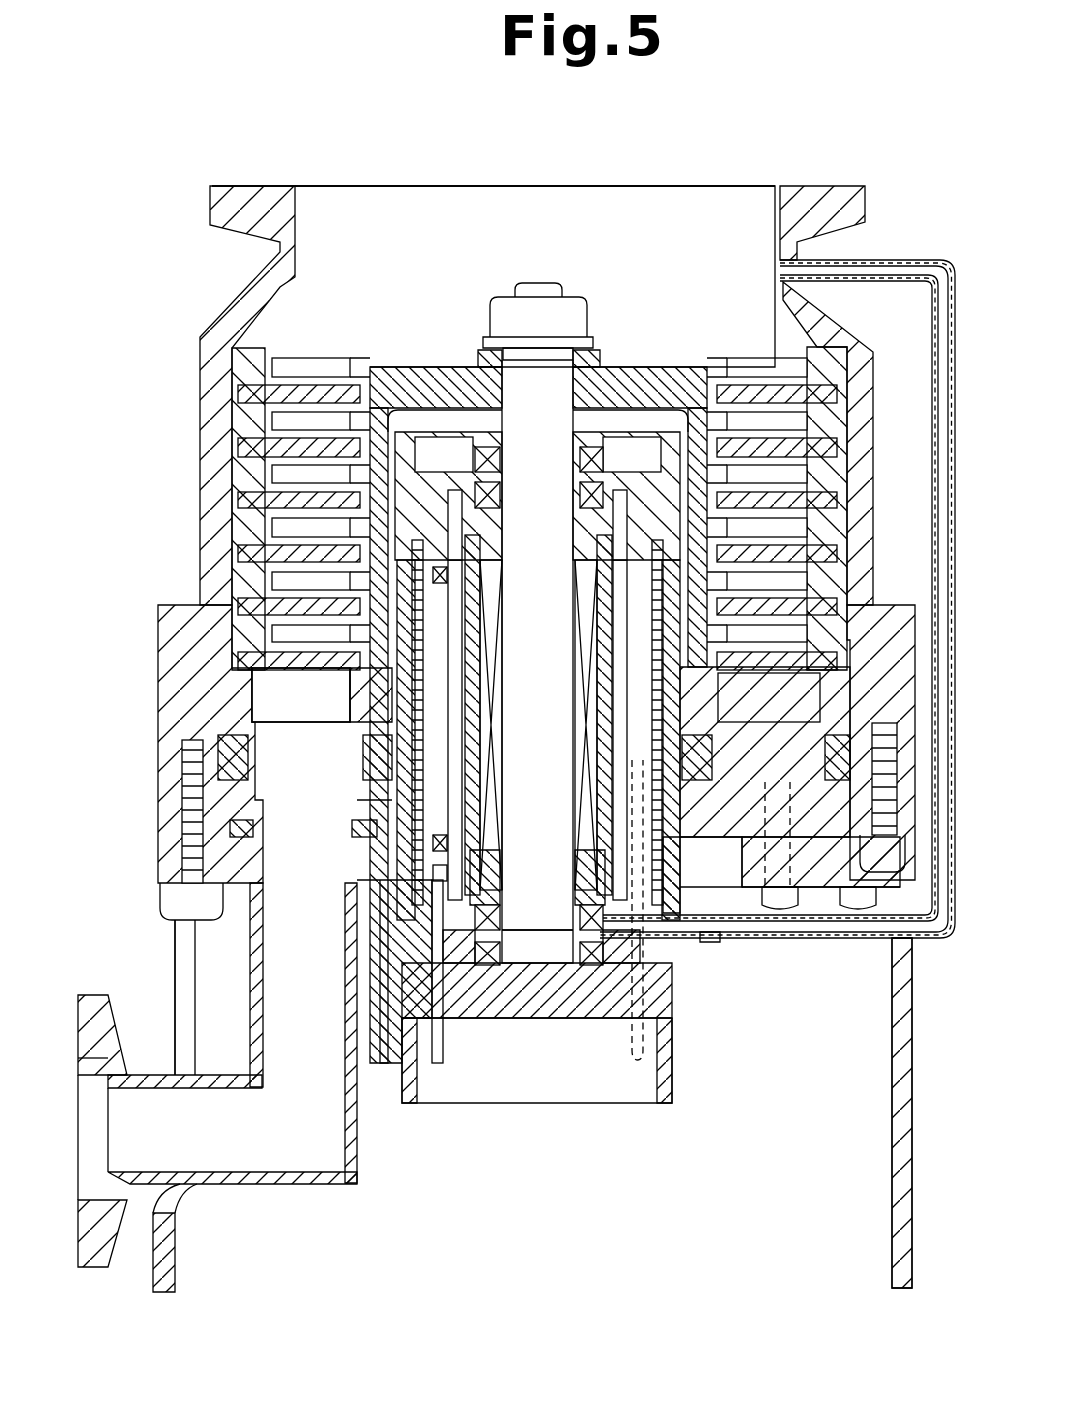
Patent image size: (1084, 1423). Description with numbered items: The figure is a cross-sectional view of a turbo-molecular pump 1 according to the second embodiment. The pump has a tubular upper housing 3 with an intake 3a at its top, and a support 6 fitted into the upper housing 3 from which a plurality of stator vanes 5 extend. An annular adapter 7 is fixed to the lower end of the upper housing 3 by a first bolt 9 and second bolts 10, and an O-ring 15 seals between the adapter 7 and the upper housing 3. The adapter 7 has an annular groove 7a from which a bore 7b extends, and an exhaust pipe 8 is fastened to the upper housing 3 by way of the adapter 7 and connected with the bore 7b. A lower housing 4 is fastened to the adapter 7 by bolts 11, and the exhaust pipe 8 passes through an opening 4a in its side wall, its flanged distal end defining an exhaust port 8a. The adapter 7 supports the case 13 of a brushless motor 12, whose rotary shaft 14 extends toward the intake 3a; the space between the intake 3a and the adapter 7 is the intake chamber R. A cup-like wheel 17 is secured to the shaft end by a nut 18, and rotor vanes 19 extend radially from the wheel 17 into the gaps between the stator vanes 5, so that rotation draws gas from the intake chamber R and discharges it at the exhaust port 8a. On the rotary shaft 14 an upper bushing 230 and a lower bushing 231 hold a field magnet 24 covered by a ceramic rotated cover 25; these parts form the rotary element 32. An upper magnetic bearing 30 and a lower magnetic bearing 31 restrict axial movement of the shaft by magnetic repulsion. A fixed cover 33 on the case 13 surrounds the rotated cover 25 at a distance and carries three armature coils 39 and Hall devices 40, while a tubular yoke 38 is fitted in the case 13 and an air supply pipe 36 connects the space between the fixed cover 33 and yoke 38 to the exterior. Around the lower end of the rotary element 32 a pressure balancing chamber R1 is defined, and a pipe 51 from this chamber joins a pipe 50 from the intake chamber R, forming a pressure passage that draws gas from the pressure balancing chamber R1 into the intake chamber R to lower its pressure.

The turbo-molecular pump 1 is at (318, 152).
The upper housing 3 is at (208, 470).
The intake 3a is at (778, 186).
The lower housing 4 is at (152, 1270).
The opening 4a is at (173, 962).
The stator vanes 5 is at (245, 394).
The support 6 is at (845, 452).
The adapter 7 is at (720, 825).
The annular groove 7a is at (766, 757).
The bore 7b is at (345, 735).
The exhaust pipe 8 is at (303, 1184).
The exhaust port 8a is at (108, 1060).
The first bolt 9 is at (208, 922).
The second bolts 10 is at (866, 865).
The bolts 11 is at (805, 920).
The brushless motor 12 is at (712, 1003).
The case 13 is at (700, 990).
The rotary shaft 14 is at (525, 915).
The O-ring 15 is at (250, 750).
The wheel 17 is at (650, 366).
The nut 18 is at (568, 297).
The rotor vanes 19 is at (330, 425).
The field magnet 24 is at (512, 700).
The rotated cover 25 is at (492, 752).
The upper magnetic bearing 30 is at (481, 427).
The lower magnetic bearing 31 is at (494, 980).
The rotary element 32 is at (652, 904).
The fixed cover 33 is at (482, 812).
The air supply pipe 36 is at (445, 1065).
The yoke 38 is at (385, 850).
The armature coils 39 is at (365, 790).
The Hall devices 40 is at (378, 890).
The pipe 50 is at (872, 260).
The pipe 51 is at (705, 940).
The upper bushing 230 is at (500, 525).
The lower bushing 231 is at (505, 905).
The intake chamber R is at (428, 278).
The pressure balancing chamber R1 is at (572, 966).